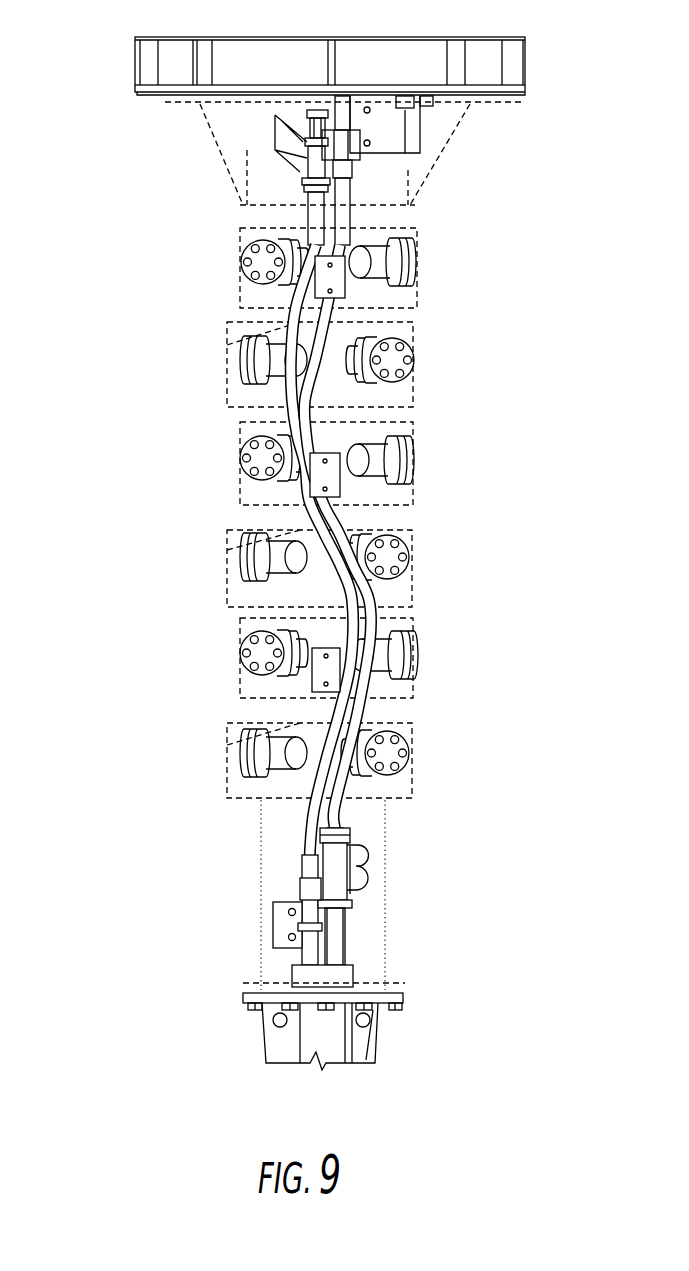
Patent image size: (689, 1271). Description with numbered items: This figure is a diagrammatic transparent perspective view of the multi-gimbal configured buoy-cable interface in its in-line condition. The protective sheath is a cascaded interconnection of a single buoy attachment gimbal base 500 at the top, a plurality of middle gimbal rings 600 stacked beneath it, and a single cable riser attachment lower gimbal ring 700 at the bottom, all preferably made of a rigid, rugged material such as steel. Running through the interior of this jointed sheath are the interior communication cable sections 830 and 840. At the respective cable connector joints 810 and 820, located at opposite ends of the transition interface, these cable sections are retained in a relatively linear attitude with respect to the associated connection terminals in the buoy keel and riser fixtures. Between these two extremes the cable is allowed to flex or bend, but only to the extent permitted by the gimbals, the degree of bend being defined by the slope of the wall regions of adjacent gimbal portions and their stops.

The buoy attachment gimbal base 500 is at (450, 132).
The middle gimbal rings 600 is at (410, 390).
The cable riser attachment lower gimbal ring 700 is at (387, 853).
The cable connector joint 810 is at (352, 925).
The cable connector joint 820 is at (350, 218).
The interior communication cable section 830 is at (289, 318).
The interior communication cable section 840 is at (302, 388).